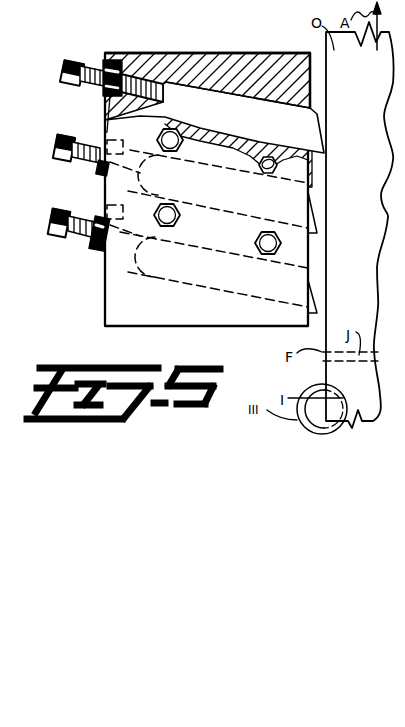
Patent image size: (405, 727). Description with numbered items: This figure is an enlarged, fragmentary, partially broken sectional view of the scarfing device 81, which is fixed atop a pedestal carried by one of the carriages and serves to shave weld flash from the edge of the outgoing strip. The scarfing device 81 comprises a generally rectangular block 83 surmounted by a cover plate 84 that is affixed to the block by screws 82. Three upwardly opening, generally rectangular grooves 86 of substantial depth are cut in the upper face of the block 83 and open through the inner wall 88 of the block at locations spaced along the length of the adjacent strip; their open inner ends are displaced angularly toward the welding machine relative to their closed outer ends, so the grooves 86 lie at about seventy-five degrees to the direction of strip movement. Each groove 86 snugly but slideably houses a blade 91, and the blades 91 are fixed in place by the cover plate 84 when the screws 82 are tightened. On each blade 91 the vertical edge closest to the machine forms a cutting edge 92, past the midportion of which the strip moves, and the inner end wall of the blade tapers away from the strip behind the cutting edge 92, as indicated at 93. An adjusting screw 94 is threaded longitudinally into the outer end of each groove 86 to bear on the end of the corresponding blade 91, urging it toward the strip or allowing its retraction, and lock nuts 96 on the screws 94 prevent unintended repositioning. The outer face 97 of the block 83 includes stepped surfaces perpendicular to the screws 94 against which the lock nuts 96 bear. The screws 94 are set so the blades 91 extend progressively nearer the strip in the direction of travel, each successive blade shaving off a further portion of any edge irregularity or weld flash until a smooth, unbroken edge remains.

The scarfing device 81 is at (157, 38).
The screws 82 is at (160, 140).
The block 83 is at (303, 86).
The cover plate 84 is at (155, 325).
The grooves 86 is at (240, 92).
The inner wall 88 is at (313, 63).
The blades 91 is at (190, 95).
The cutting edge 92 is at (317, 150).
The tapered inner end wall 93 is at (322, 123).
The adjusting screw 94 is at (72, 58).
The lock nuts 96 is at (105, 97).
The outer face 97 is at (107, 108).